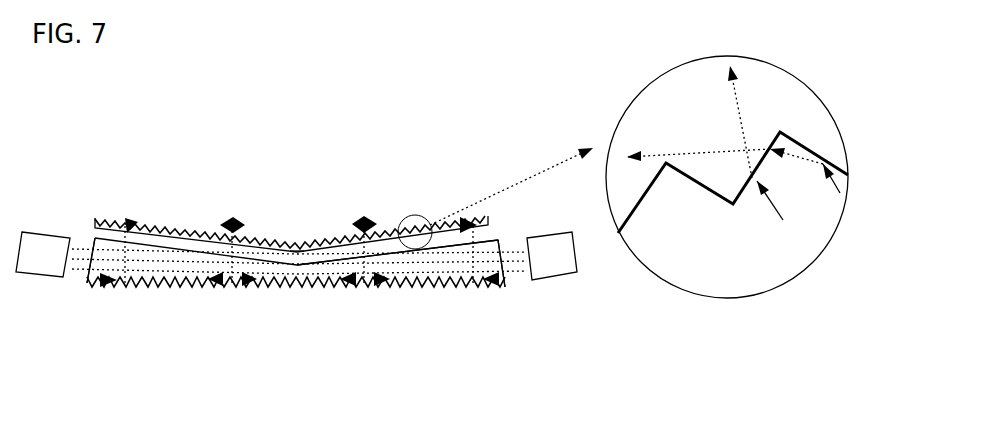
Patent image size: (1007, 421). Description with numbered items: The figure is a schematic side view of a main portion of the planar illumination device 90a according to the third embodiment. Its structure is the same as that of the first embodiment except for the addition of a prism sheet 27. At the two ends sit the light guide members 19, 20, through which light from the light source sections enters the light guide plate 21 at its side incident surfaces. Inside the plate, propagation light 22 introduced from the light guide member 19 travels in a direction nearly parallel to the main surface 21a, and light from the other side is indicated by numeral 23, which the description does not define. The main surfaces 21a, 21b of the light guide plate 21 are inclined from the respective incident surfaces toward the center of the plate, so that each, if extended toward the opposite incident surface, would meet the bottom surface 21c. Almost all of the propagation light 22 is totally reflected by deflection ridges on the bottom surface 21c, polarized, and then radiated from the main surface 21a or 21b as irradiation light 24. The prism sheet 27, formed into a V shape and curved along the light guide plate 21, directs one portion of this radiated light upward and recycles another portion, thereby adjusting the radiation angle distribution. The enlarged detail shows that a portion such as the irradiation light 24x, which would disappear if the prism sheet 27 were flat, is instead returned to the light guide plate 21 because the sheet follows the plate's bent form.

The planar illumination device 90a is at (115, 117).
The light guide member 19 is at (43, 243).
The light guide member 20 is at (547, 240).
The light guide plate 21 is at (477, 243).
The main surface 21a is at (165, 247).
The main surface 21b is at (439, 247).
The bottom surface 21c is at (420, 283).
The propagation light 22 is at (105, 267).
The light incident end surface 23 is at (493, 263).
The irradiation light 24 is at (299, 229).
The irradiation light 24x is at (688, 153).
The prism sheet 27 is at (283, 252).